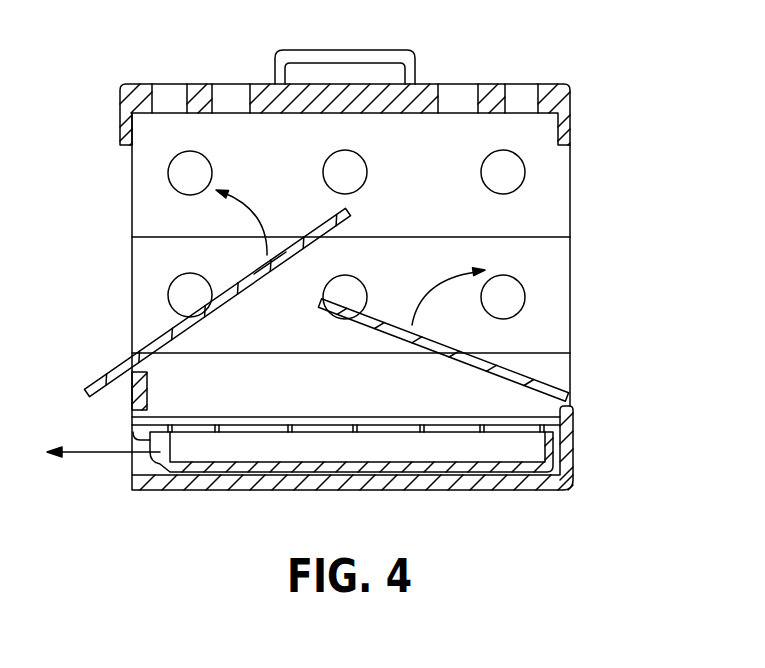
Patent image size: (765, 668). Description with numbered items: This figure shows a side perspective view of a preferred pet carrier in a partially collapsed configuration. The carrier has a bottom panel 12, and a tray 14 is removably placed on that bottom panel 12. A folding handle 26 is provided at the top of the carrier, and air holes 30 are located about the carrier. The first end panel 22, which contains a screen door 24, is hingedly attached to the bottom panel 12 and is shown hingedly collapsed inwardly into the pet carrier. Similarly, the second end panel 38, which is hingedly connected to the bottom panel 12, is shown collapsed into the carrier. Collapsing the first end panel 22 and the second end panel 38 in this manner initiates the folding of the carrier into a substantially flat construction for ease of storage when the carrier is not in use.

The bottom panel 12 is at (566, 437).
The tray 14 is at (390, 450).
The first end panel 22 is at (160, 342).
The screen door section 24 is at (262, 280).
The folding handle 26 is at (372, 52).
The air holes 30 is at (522, 86).
The second end panel 38 is at (527, 372).